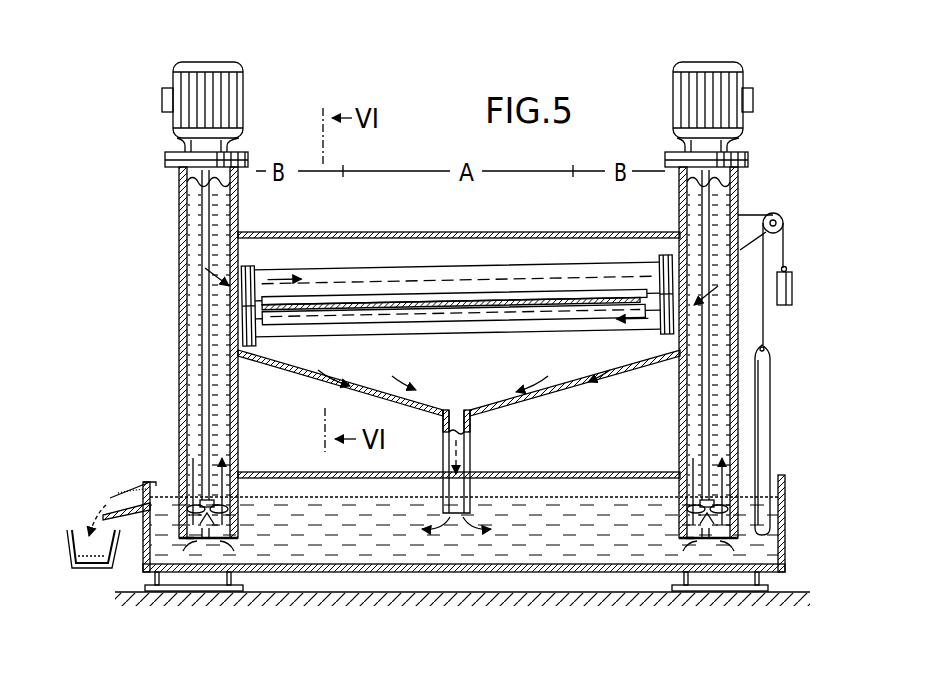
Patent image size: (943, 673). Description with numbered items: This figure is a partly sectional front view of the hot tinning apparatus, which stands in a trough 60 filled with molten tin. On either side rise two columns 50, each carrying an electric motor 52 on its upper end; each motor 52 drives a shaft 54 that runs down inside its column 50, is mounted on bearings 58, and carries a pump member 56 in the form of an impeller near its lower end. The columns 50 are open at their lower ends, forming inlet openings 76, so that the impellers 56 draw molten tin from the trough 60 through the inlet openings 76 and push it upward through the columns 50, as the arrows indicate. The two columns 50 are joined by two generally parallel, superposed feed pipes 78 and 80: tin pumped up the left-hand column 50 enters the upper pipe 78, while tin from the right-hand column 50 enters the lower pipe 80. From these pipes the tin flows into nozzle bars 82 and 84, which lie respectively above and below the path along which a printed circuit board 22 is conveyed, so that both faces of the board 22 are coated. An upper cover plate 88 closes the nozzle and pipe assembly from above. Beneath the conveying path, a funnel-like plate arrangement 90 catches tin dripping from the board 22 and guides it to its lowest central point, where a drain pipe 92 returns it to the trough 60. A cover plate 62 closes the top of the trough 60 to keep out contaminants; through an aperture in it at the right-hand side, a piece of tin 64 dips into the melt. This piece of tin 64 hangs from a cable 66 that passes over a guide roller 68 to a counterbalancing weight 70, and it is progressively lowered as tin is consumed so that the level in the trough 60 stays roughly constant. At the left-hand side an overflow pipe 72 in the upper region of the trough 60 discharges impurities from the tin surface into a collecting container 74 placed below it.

The printed circuit board 22 is at (447, 306).
The columns 50 is at (185, 243).
The electric motors 52 is at (208, 76).
The shafts 54 is at (203, 316).
The pump members 56 is at (202, 503).
The bearings 58 is at (208, 545).
The trough 60 is at (535, 575).
The cover plate 62 is at (560, 472).
The piece of tin 64 is at (766, 406).
The cable 66 is at (785, 266).
The guide roller 68 is at (782, 215).
The weight 70 is at (792, 290).
The overflow pipe 72 is at (118, 497).
The collecting container 74 is at (78, 568).
The inlet openings 76 is at (195, 545).
The upper feed pipe 78 is at (457, 306).
The lower feed pipe 80 is at (357, 334).
The upper nozzle bar 82 is at (517, 293).
The lower nozzle bar 84 is at (548, 321).
The upper cover plate 88 is at (469, 232).
The plate arrangement 90 is at (562, 385).
The drain pipe 92 is at (460, 452).